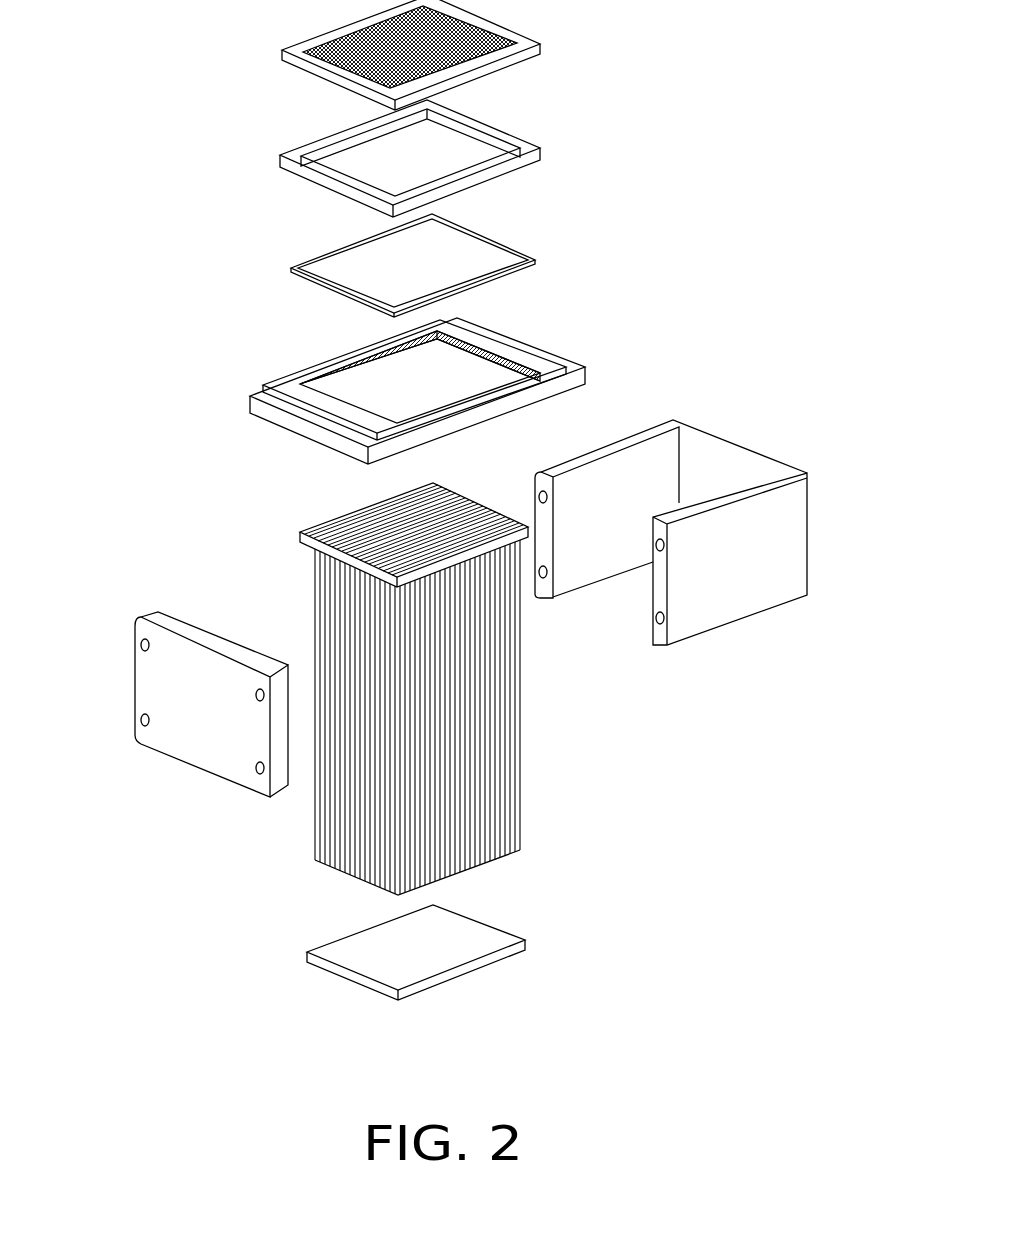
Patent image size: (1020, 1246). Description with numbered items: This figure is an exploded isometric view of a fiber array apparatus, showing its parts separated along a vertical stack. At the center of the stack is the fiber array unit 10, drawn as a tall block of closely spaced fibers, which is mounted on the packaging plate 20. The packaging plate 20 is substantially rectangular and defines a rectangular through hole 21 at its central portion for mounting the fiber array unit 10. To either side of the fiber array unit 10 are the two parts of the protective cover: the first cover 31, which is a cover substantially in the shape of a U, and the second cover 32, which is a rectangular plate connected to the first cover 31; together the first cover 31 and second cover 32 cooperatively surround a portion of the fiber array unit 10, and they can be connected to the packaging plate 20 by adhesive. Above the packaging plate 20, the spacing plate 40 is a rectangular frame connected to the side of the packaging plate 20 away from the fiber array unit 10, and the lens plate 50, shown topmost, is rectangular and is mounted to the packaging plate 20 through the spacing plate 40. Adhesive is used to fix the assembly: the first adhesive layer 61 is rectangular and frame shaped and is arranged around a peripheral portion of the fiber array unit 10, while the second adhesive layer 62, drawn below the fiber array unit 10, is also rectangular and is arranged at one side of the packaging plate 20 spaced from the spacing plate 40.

The fiber array unit 10 is at (299, 576).
The packaging plate 20 is at (458, 391).
The through hole 21 is at (351, 368).
The first cover 31 is at (795, 523).
The second cover 32 is at (140, 677).
The spacing plate 40 is at (540, 157).
The lens plate 50 is at (537, 48).
The first adhesive layer 61 is at (533, 259).
The second adhesive layer 62 is at (490, 933).